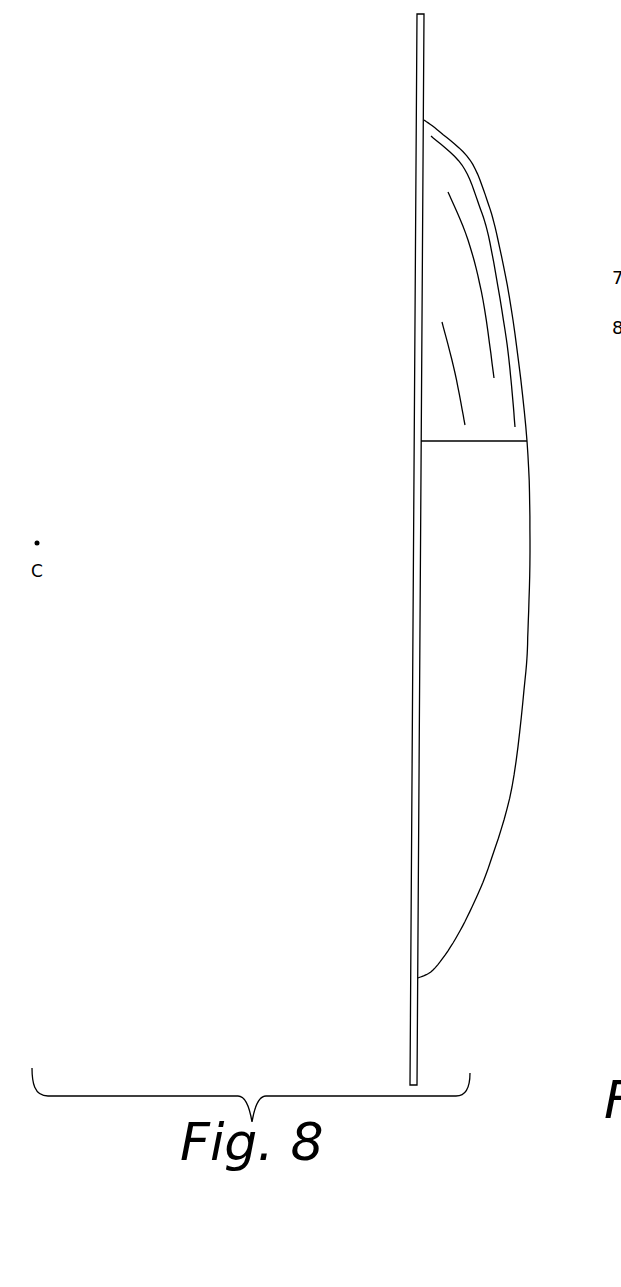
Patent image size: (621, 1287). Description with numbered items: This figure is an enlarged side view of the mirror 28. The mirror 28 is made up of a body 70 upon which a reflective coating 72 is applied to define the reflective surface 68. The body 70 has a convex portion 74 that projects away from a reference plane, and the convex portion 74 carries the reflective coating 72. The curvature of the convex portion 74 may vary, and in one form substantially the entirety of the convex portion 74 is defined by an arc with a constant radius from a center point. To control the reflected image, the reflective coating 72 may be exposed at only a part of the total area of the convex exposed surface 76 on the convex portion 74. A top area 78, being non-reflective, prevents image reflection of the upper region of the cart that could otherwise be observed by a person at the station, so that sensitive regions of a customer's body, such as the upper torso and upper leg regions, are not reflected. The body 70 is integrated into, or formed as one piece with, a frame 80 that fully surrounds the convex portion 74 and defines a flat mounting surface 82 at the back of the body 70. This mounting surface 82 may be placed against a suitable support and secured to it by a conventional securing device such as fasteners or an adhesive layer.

The mirror 28 is at (546, 495).
The reflective surface 68 is at (500, 552).
The body 70 is at (421, 135).
The reflective coating 72 is at (528, 630).
The convex portion 74 is at (520, 790).
The exposed surface 76 is at (513, 302).
The top area 78 is at (460, 164).
The frame 80 is at (417, 1012).
The mounting surface 82 is at (408, 1037).